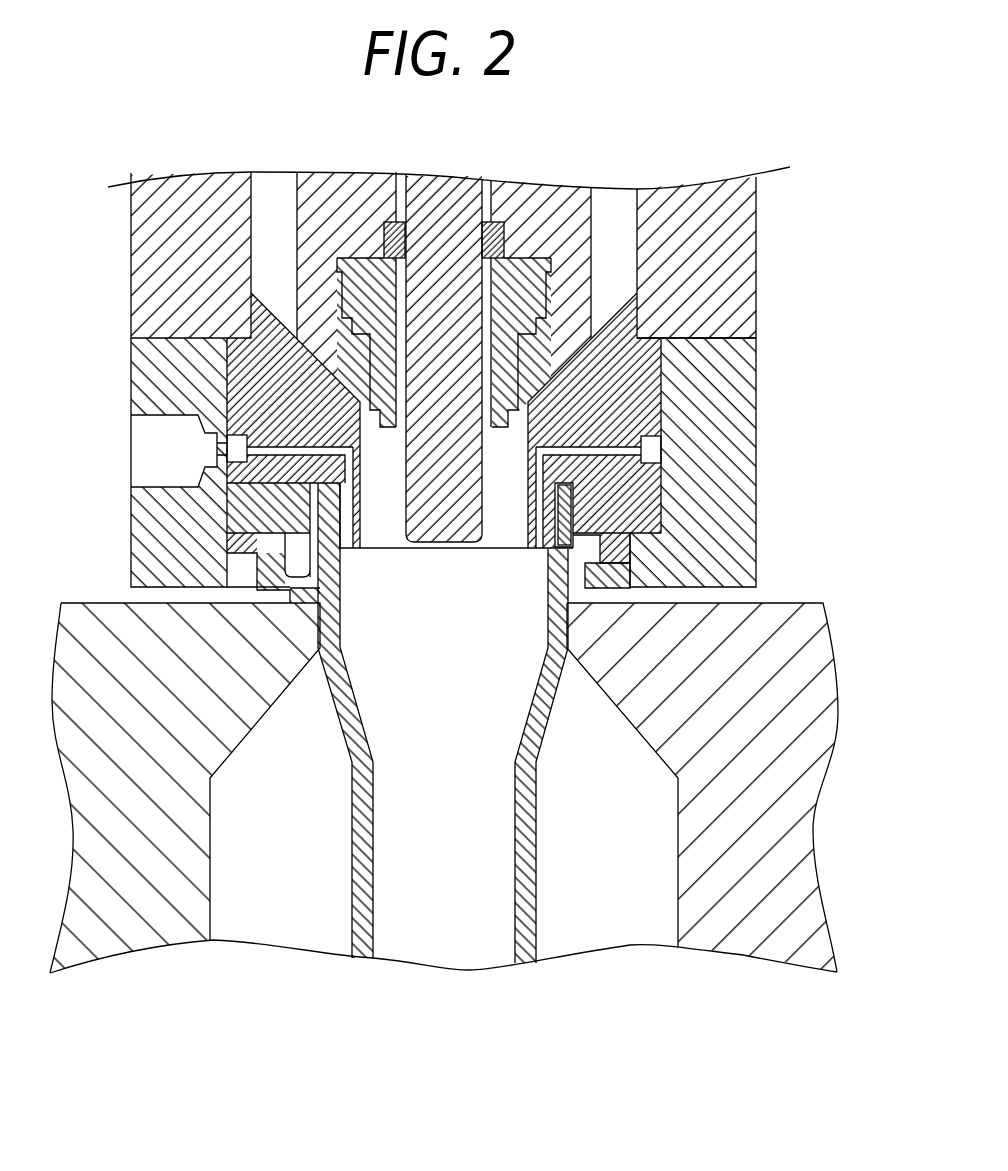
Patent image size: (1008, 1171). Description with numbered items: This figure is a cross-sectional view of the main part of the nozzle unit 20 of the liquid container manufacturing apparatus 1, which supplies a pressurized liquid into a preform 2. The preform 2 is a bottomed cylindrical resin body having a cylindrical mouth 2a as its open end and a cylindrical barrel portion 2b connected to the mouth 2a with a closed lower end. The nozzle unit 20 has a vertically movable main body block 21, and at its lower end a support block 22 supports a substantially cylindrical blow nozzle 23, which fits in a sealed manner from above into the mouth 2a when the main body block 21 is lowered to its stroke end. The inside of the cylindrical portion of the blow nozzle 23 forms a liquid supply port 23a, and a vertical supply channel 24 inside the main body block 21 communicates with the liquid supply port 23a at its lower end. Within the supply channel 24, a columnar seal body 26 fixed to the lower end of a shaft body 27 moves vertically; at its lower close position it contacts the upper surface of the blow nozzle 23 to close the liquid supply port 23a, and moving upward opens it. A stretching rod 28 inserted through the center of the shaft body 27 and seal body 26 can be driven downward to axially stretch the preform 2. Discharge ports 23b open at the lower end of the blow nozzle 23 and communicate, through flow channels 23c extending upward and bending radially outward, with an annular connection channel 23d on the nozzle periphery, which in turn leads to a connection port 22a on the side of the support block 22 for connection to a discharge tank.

The liquid container manufacturing apparatus 1 is at (790, 128).
The preform 2 is at (570, 568).
The mouth 2a is at (570, 522).
The barrel portion 2b is at (548, 677).
The nozzle unit 20 is at (757, 272).
The main body block 21 is at (733, 318).
The support block 22 is at (157, 373).
The connection port 22a is at (152, 452).
The blow nozzle 23 is at (613, 310).
The liquid supply port 23a is at (505, 523).
The discharge port 23b is at (343, 550).
The flow channel 23c is at (347, 503).
The connection channel 23d is at (653, 450).
The supply channel 24 is at (273, 192).
The seal body 26 is at (527, 262).
The shaft body 27 is at (313, 263).
The stretching rod 28 is at (435, 527).